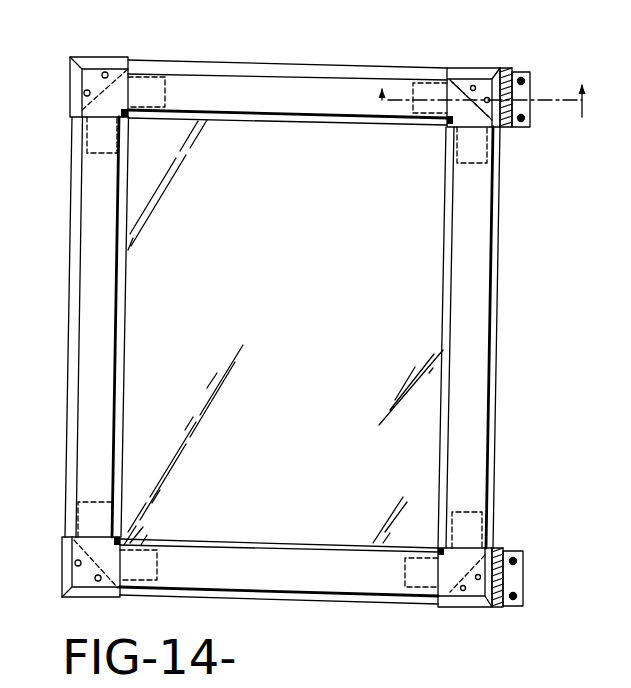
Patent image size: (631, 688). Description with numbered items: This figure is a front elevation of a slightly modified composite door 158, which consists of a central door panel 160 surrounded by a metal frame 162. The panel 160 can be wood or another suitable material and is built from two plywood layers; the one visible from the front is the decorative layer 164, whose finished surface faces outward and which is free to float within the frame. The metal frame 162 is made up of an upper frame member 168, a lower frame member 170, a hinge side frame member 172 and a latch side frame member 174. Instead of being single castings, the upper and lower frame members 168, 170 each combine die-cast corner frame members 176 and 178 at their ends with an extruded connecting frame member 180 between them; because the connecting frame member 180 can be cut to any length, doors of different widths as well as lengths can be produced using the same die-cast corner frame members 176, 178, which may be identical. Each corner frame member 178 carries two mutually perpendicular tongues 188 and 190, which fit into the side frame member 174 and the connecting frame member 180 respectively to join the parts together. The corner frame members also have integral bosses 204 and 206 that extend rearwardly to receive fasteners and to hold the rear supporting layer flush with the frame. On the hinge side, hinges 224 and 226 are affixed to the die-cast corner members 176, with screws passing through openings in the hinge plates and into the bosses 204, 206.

The composite door 158 is at (539, 253).
The central door panel 160 is at (428, 306).
The metal frame 162 is at (506, 375).
The decorative layer 164 is at (240, 296).
The upper frame member 168 is at (364, 57).
The lower frame member 170 is at (350, 611).
The hinge side frame member 172 is at (498, 424).
The latch side frame member 174 is at (66, 420).
The die-cast corner frame member 176 is at (491, 66).
The die-cast corner frame member 178 is at (106, 56).
The extruded connecting frame member 180 is at (299, 60).
The tongue 188 is at (86, 135).
The tongue 190 is at (147, 74).
The boss 204 is at (538, 82).
The boss 206 is at (473, 84).
The hinge 224 is at (530, 578).
The hinge 226 is at (534, 121).